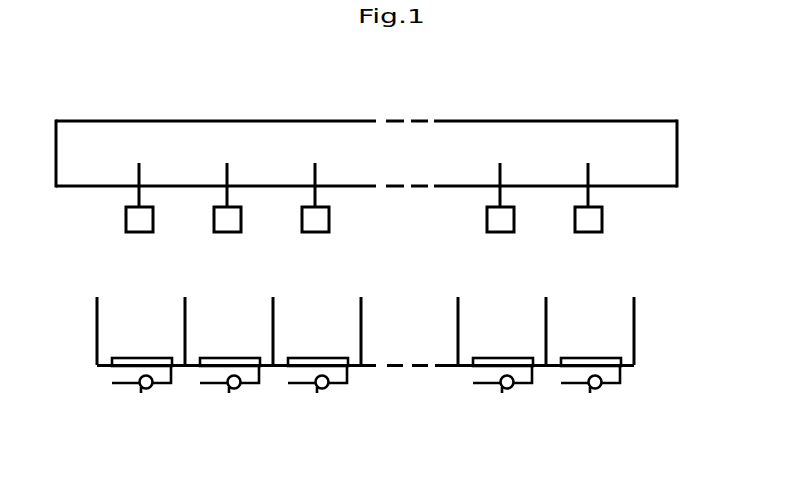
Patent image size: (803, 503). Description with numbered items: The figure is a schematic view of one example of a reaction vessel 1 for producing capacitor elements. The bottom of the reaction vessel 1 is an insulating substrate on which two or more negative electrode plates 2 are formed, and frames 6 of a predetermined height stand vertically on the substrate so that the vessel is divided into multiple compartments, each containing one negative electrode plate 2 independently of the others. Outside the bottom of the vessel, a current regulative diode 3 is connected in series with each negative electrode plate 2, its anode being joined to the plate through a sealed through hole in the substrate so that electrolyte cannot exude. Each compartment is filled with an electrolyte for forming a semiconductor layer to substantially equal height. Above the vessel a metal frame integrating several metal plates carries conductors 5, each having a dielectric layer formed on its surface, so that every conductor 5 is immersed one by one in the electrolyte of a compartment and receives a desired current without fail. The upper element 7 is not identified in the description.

The reaction vessel 1 is at (630, 283).
The negative electrode plate 2 is at (583, 360).
The current regulative diode 3 is at (600, 387).
The conductor 5 is at (590, 218).
The frame 6 is at (456, 342).
The main controller 7 is at (608, 138).